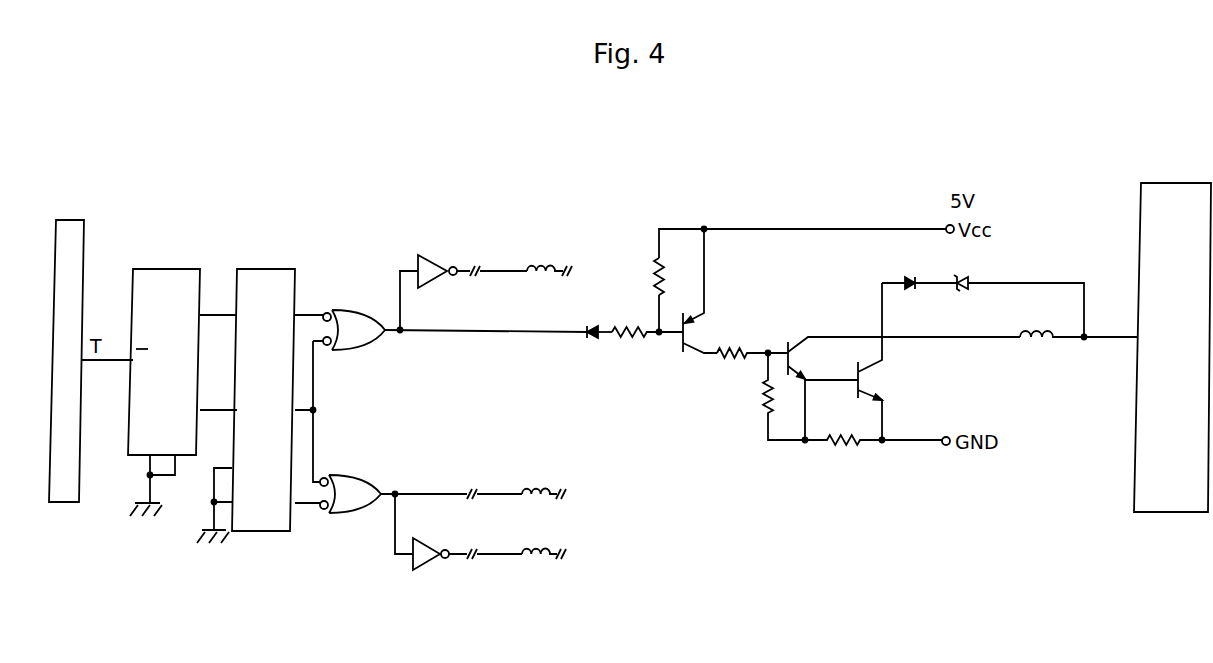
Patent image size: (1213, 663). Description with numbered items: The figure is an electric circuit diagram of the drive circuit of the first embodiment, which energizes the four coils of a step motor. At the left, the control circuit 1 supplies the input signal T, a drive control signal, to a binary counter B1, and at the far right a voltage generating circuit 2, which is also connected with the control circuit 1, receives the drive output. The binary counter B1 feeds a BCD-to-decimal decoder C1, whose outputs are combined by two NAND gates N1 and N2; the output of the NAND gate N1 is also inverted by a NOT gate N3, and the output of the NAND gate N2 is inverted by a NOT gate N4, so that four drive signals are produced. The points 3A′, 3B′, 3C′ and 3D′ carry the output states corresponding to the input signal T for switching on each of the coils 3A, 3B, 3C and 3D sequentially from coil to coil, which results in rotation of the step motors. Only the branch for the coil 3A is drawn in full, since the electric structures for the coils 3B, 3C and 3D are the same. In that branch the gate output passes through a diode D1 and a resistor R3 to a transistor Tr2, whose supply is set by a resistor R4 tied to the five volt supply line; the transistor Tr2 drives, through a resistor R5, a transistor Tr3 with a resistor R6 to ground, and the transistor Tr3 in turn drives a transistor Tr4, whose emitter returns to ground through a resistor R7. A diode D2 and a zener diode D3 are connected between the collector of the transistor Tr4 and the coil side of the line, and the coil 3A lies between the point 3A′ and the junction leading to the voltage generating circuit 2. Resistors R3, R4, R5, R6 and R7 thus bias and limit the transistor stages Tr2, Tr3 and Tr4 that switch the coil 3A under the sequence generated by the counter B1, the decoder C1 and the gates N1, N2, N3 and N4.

The control circuit 1 is at (83, 219).
The voltage generating circuit 2 is at (1173, 183).
The binary counter B1 is at (175, 268).
The BCD-to-decimal decoder C1 is at (272, 268).
The NAND gate N1 is at (353, 310).
The NAND gate N2 is at (353, 475).
The NOT gate N3 is at (430, 255).
The NOT gate N4 is at (425, 570).
The coil 3A is at (1038, 333).
The output point 3A′ is at (970, 326).
The coil 3B is at (535, 490).
The output point 3B′ is at (494, 485).
The coil 3C is at (540, 268).
The output point 3C′ is at (492, 262).
The coil 3D is at (536, 551).
The output point 3D′ is at (485, 545).
The diode D1 is at (591, 326).
The diode D2 is at (911, 276).
The zener diode D3 is at (968, 273).
The resistor R3 is at (633, 340).
The resistor R4 is at (664, 270).
The resistor R5 is at (728, 348).
The resistor R6 is at (763, 398).
The resistor R7 is at (849, 446).
The transistor Tr2 is at (688, 336).
The transistor Tr3 is at (790, 347).
The transistor Tr4 is at (866, 376).